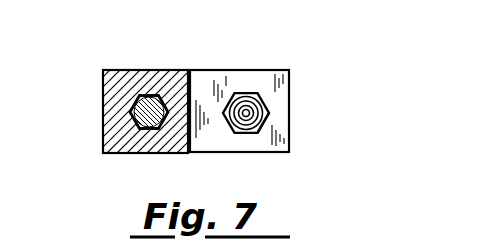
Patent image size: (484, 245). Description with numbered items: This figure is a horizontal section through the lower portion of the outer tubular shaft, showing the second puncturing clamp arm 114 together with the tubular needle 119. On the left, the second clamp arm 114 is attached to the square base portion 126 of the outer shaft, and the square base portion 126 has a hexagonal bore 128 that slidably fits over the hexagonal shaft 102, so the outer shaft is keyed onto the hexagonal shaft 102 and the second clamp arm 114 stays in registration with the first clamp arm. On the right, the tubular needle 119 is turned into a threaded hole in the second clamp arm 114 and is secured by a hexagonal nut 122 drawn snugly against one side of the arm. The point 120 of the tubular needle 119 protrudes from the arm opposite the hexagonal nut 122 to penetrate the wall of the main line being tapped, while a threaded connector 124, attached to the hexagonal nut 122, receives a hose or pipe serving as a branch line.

The hexagonal shaft 102 is at (150, 94).
The second puncturing clamp arm 114 is at (203, 82).
The tubular needle member 119 is at (262, 158).
The point of the tubular needle 120 is at (263, 122).
The hexagonal nut 122 is at (256, 92).
The threaded connector 124 is at (265, 102).
The square base portion 126 is at (127, 75).
The hexagonal bore 128 is at (144, 132).